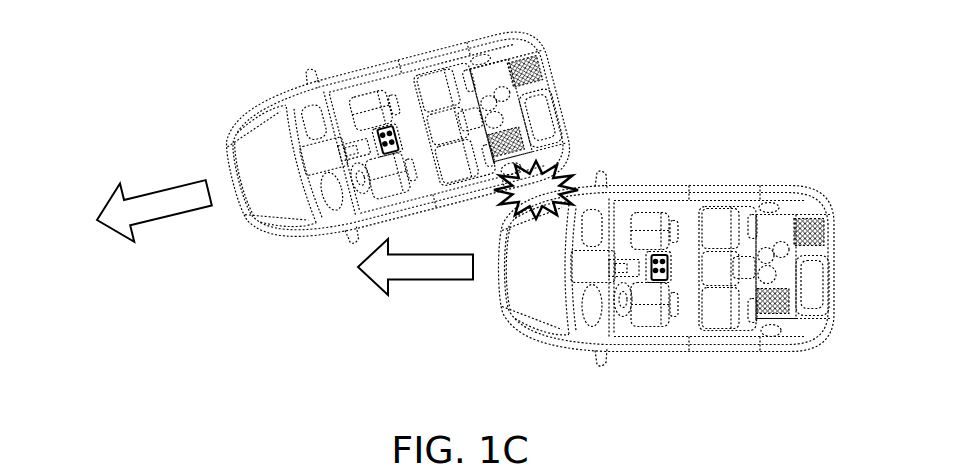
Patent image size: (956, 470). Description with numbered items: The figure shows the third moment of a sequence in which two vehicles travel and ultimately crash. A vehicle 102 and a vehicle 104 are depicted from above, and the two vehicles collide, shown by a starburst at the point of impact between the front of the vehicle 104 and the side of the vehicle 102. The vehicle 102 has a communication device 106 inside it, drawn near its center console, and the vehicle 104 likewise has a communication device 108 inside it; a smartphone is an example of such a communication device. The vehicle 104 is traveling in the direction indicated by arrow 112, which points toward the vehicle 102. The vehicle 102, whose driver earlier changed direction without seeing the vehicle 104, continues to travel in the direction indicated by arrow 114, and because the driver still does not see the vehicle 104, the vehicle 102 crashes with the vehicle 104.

The vehicle 102 is at (568, 80).
The vehicle 104 is at (856, 281).
The communication device 106 is at (386, 128).
The communication device 108 is at (660, 282).
The arrow 112 is at (362, 281).
The arrow 114 is at (108, 228).